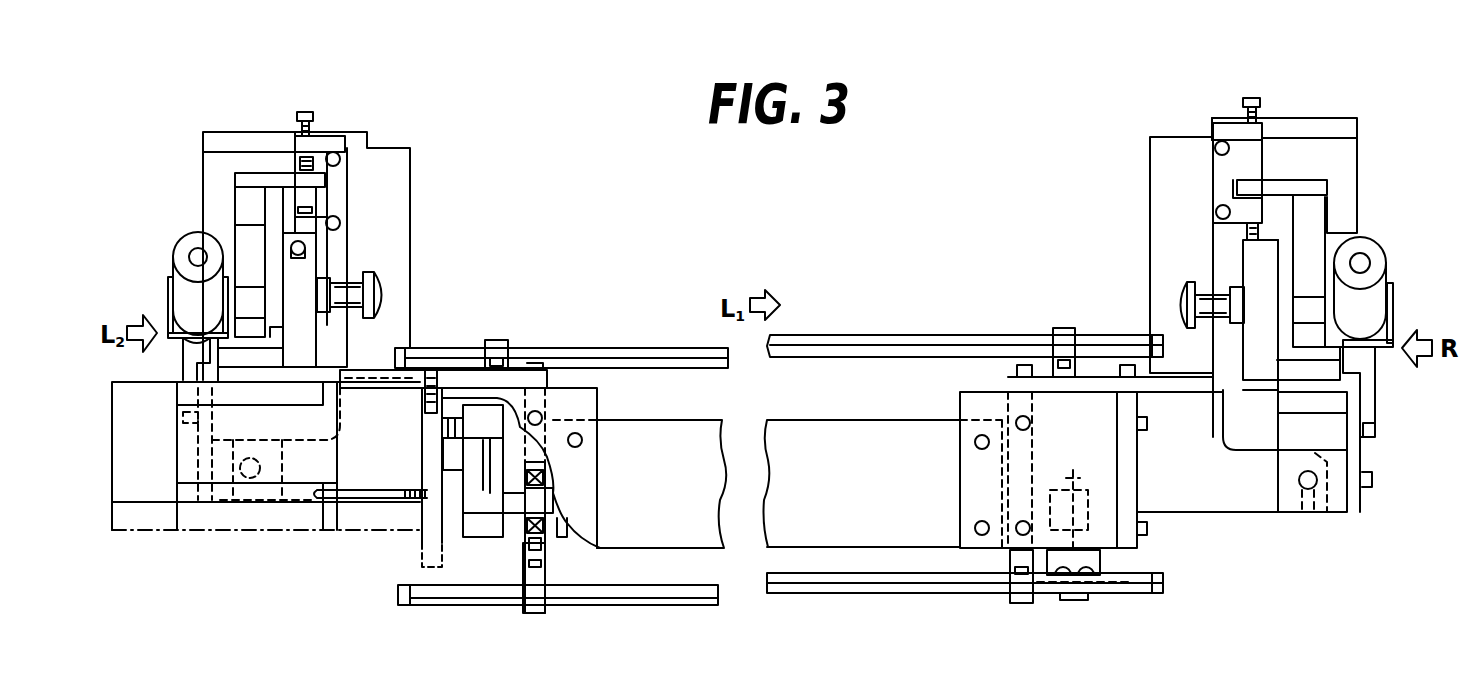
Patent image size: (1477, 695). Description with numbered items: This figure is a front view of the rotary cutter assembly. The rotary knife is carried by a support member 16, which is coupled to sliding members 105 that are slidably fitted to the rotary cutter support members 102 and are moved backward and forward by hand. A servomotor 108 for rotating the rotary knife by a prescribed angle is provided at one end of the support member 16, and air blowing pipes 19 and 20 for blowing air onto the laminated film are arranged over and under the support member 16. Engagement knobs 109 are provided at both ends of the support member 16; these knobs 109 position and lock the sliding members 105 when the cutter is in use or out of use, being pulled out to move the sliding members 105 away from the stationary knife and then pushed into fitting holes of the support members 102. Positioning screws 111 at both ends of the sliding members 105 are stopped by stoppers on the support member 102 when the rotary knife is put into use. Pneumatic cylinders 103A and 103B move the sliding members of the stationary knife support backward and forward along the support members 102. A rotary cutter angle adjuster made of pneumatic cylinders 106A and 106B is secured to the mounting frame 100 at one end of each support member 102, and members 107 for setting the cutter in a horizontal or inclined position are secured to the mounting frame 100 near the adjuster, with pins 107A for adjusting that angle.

The support member 16 is at (852, 540).
The air blowing pipe 19 is at (560, 348).
The air blowing pipe 20 is at (686, 597).
The mounting frame 100 is at (390, 155).
The rotary cutter support member 102 is at (245, 200).
The pneumatic cylinder 103A is at (192, 235).
The pneumatic cylinder 103B is at (1365, 240).
The sliding member 105 is at (1202, 502).
The pneumatic cylinder 106A is at (244, 157).
The pneumatic cylinder 106B is at (1304, 147).
The angle setting member 107 is at (333, 145).
The angle adjusting pin 107A is at (306, 110).
The servomotor 108 is at (155, 492).
The engagement knob 109 is at (352, 290).
The positioning screw 111 is at (305, 240).